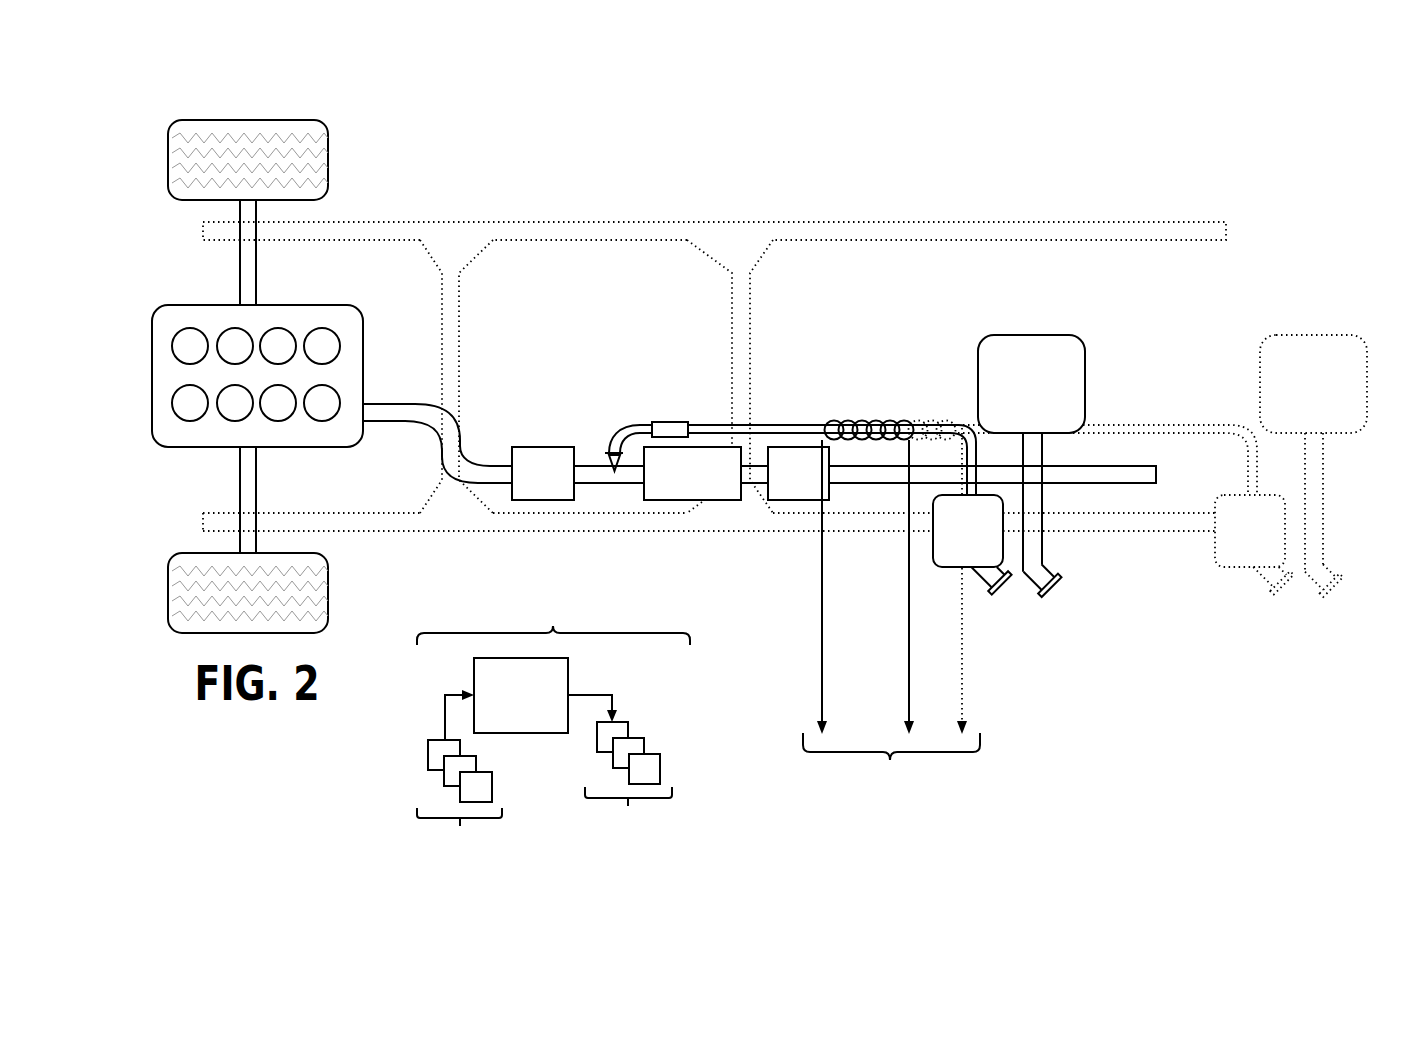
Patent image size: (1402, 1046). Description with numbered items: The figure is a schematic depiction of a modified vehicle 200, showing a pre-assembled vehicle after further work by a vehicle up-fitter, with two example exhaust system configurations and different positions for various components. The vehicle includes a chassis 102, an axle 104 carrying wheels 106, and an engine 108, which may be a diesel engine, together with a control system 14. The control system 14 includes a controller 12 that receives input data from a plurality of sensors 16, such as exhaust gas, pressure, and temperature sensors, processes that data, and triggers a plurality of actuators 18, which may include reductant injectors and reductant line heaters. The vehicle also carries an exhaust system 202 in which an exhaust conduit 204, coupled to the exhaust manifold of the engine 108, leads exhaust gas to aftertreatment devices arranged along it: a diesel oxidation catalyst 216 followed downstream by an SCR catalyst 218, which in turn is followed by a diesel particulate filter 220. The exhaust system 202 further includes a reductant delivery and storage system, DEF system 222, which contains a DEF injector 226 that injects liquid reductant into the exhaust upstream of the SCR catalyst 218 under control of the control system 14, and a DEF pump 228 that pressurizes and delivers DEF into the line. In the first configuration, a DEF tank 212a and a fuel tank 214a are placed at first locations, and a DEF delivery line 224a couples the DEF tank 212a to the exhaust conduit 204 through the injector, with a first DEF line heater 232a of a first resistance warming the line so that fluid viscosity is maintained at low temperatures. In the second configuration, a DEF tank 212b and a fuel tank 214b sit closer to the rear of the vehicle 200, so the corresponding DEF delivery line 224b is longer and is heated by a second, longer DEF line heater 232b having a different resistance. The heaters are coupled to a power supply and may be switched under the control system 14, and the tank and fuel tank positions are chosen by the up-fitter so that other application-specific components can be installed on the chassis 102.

The modified vehicle 200 is at (1336, 118).
The chassis 102 is at (586, 222).
The axle 104 is at (240, 289).
The wheels 106 is at (168, 160).
The engine 108 is at (152, 378).
The exhaust system 202 is at (566, 378).
The exhaust conduit 204 is at (410, 404).
The DEF tank 212a is at (972, 545).
The DEF tank 212b is at (1254, 545).
The fuel tank 214a is at (1031, 466).
The fuel tank 214b is at (1313, 466).
The diesel oxidation catalyst 216 is at (543, 473).
The SCR catalyst 218 is at (692, 473).
The diesel particulate filter 220 is at (798, 473).
The DEF system 222 is at (955, 340).
The DEF delivery line 224a is at (795, 424).
The DEF delivery line 224b is at (1203, 424).
The DEF injector 226 is at (607, 456).
The DEF pump 228 is at (657, 422).
The DEF line heater 232a is at (878, 420).
The DEF line heater 232b is at (947, 420).
The control system 14 is at (553, 724).
The controller 12 is at (521, 695).
The sensors 16 is at (459, 780).
The actuators 18 is at (620, 772).